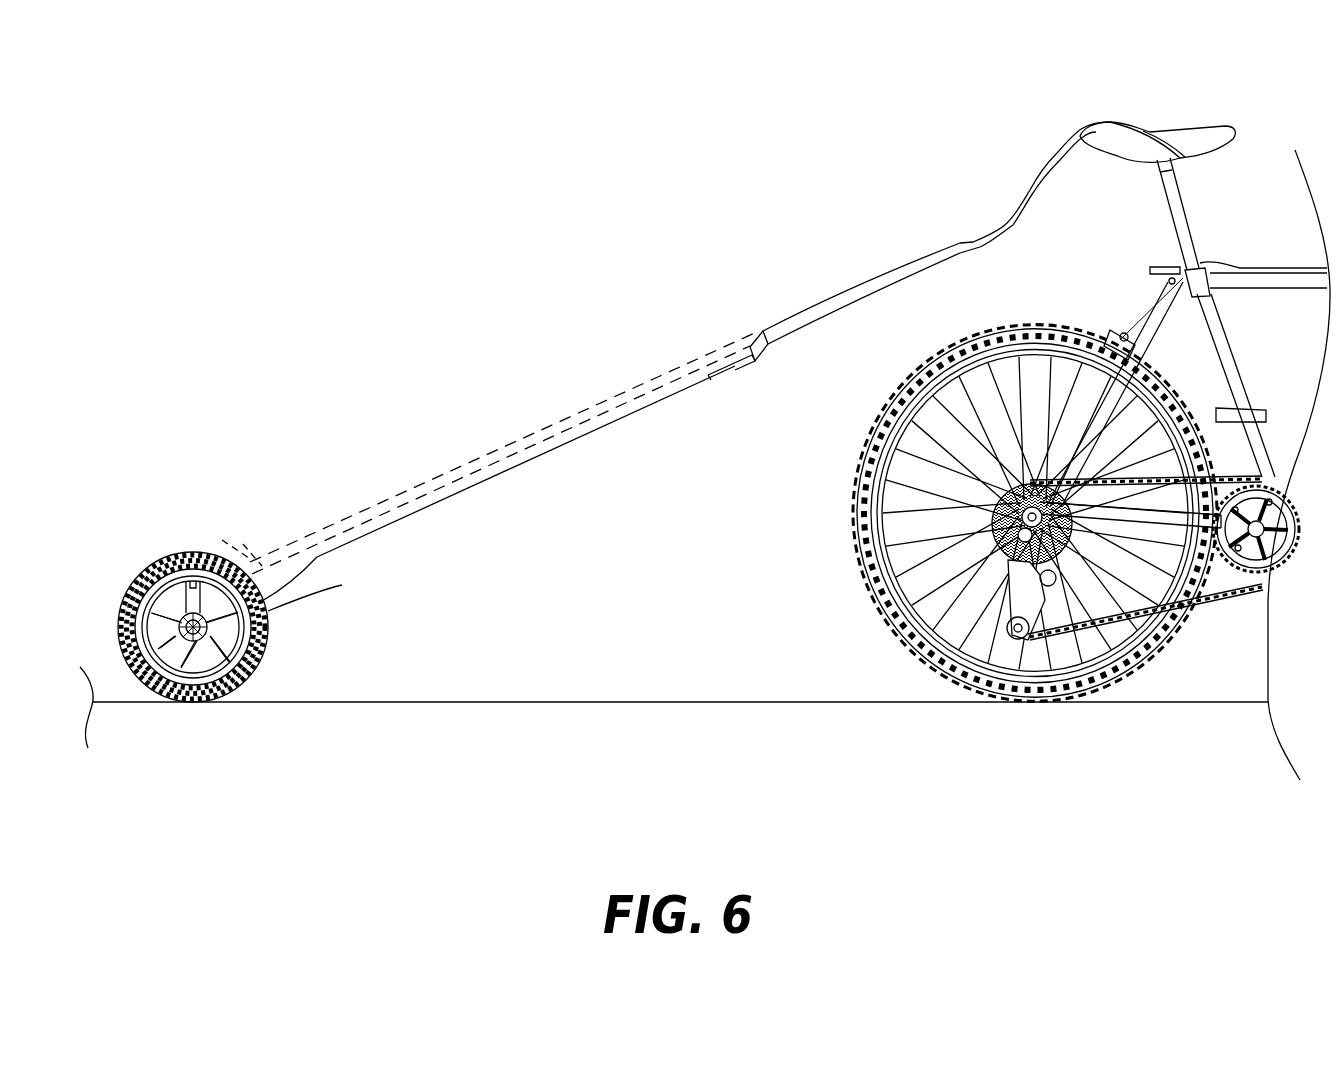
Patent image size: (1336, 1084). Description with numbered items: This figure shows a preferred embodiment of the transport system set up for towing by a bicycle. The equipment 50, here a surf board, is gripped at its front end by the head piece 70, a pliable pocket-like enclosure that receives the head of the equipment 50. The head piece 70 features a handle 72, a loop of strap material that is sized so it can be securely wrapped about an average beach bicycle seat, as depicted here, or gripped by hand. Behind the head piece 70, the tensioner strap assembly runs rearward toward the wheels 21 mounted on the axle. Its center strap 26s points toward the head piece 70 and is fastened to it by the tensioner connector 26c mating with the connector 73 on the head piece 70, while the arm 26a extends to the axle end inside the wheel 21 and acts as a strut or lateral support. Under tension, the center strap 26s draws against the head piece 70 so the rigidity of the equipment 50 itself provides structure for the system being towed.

The wheel 21 is at (145, 566).
The arm 26a is at (297, 590).
The center strap 26s is at (577, 440).
The tensioner connector 26c is at (712, 380).
The equipment 50 is at (432, 481).
The head piece 70 is at (832, 296).
The handle 72 is at (1153, 130).
The mating connector 73 is at (747, 366).